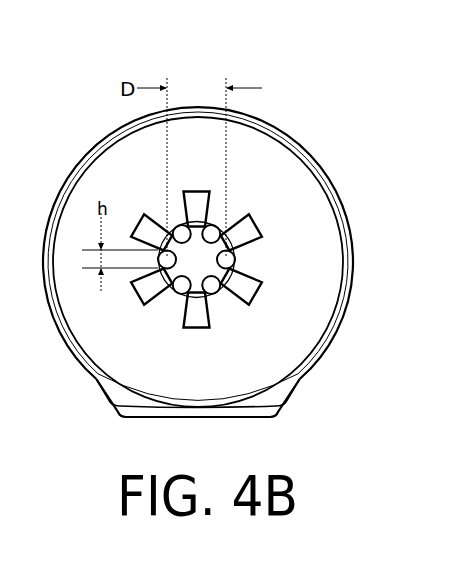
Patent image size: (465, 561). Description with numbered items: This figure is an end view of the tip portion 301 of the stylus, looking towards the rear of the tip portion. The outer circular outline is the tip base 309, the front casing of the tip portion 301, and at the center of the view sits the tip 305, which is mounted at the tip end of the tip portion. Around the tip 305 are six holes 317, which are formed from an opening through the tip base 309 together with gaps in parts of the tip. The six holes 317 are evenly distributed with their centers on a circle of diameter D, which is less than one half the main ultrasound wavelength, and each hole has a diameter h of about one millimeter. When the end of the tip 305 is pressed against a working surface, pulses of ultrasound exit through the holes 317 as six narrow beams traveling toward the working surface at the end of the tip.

The tip portion 301 is at (248, 287).
The tip 305 is at (201, 270).
The tip base 309 is at (108, 170).
The holes 317 is at (181, 233).